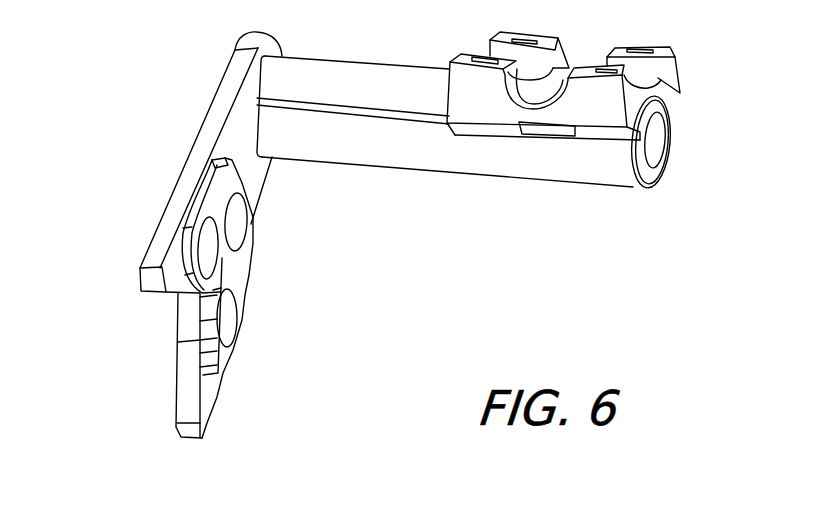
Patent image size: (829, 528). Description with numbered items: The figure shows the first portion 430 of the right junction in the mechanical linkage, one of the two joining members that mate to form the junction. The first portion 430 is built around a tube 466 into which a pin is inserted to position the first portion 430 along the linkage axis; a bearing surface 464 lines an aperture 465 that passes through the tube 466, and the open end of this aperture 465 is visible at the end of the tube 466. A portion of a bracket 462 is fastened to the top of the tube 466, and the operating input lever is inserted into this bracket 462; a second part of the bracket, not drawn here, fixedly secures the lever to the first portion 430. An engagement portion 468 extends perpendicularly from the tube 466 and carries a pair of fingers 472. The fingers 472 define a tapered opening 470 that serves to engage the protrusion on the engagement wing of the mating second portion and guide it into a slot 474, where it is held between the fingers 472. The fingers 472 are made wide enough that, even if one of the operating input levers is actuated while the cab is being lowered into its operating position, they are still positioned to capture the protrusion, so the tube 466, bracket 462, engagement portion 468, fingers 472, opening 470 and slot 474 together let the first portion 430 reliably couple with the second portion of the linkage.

The first portion 430 is at (397, 289).
The bracket 462 is at (576, 103).
The bearing surface 464 is at (654, 176).
The aperture 465 is at (674, 144).
The tube 466 is at (473, 160).
The engagement portion 468 is at (221, 101).
The tapered opening 470 is at (84, 370).
The fingers 472 is at (157, 253).
The slot 474 is at (160, 320).